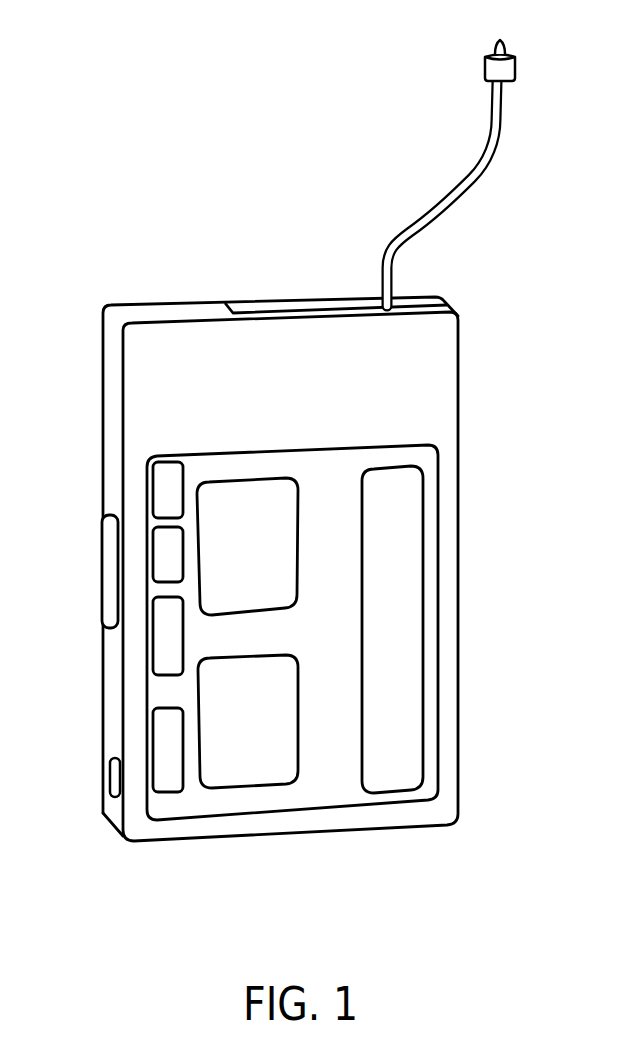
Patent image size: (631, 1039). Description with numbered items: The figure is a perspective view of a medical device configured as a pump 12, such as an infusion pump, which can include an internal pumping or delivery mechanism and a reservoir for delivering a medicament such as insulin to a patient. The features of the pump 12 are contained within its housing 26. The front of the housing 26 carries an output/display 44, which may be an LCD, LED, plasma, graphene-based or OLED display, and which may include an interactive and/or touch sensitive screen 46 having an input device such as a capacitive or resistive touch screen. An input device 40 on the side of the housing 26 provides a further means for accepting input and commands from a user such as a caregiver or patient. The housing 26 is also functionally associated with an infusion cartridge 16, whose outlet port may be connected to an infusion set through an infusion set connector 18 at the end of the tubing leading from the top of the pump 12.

The pump 12 is at (97, 201).
The infusion cartridge 16 is at (305, 313).
The infusion set connector 18 is at (507, 66).
The housing 26 is at (443, 367).
The input device 40 is at (107, 555).
The output/display 44 is at (432, 463).
The touch sensitive screen 46 is at (405, 673).